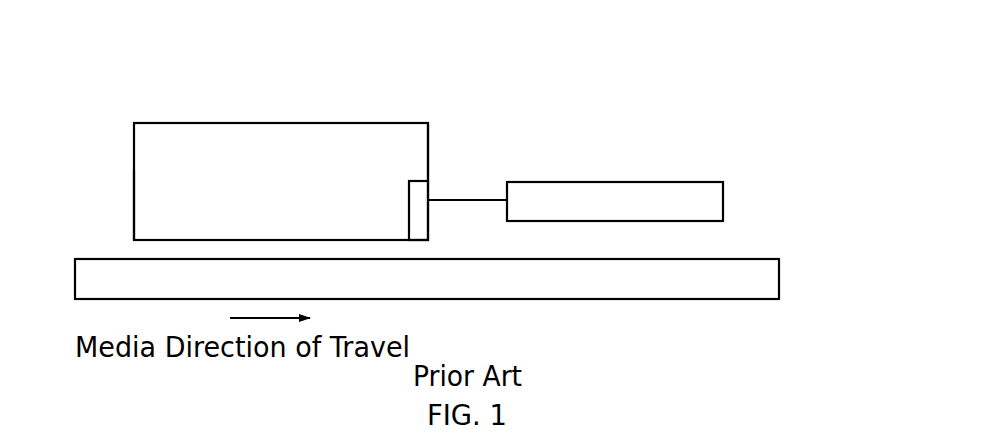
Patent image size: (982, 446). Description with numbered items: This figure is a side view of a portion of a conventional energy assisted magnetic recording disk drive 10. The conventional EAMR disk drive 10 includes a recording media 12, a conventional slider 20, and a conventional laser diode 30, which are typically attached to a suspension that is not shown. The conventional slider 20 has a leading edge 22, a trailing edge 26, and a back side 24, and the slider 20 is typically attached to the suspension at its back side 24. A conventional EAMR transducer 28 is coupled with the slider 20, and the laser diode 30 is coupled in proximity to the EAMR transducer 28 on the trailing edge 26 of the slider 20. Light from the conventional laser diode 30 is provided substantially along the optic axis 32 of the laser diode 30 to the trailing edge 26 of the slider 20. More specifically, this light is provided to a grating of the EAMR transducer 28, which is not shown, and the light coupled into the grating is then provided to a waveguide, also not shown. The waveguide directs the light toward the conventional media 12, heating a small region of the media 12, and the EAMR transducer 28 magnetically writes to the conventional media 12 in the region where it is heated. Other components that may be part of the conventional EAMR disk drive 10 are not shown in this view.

The conventional energy assisted magnetic recording (EAMR) disk drive 10 is at (487, 39).
The recording media 12 is at (780, 278).
The conventional slider 20 is at (134, 163).
The leading edge 22 is at (85, 190).
The back side 24 is at (252, 102).
The trailing edge 26 is at (435, 143).
The conventional EAMR transducer 28 is at (487, 200).
The conventional laser diode 30 is at (723, 200).
The optic axis 32 is at (430, 190).